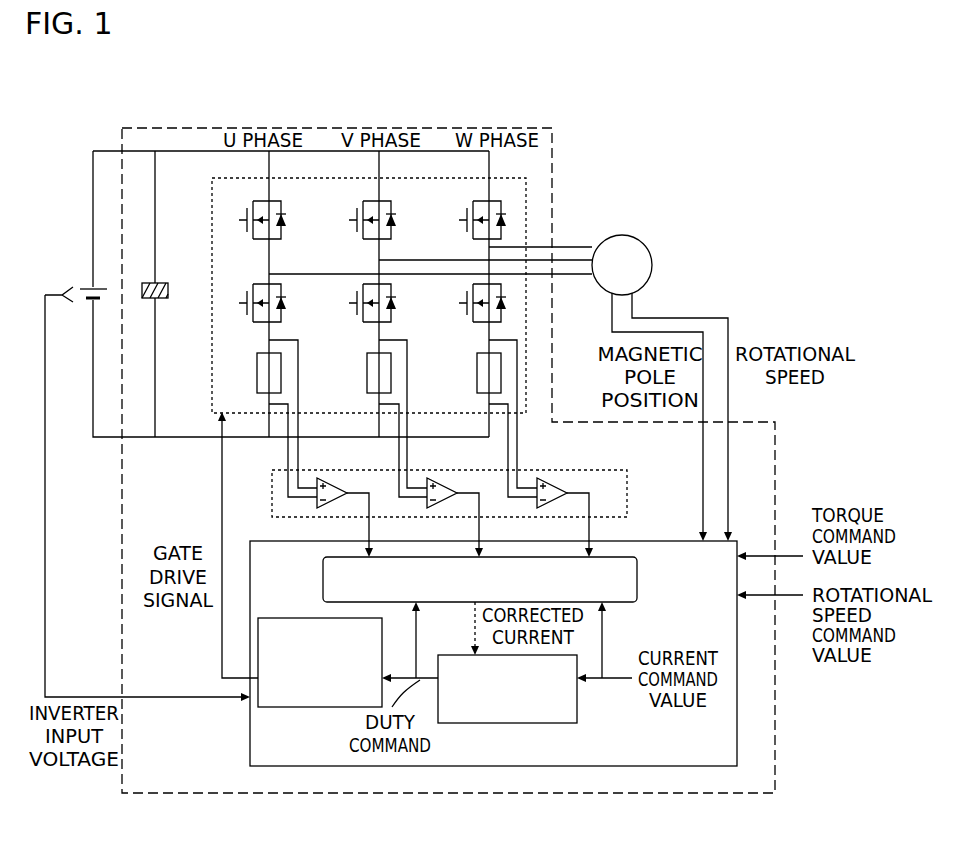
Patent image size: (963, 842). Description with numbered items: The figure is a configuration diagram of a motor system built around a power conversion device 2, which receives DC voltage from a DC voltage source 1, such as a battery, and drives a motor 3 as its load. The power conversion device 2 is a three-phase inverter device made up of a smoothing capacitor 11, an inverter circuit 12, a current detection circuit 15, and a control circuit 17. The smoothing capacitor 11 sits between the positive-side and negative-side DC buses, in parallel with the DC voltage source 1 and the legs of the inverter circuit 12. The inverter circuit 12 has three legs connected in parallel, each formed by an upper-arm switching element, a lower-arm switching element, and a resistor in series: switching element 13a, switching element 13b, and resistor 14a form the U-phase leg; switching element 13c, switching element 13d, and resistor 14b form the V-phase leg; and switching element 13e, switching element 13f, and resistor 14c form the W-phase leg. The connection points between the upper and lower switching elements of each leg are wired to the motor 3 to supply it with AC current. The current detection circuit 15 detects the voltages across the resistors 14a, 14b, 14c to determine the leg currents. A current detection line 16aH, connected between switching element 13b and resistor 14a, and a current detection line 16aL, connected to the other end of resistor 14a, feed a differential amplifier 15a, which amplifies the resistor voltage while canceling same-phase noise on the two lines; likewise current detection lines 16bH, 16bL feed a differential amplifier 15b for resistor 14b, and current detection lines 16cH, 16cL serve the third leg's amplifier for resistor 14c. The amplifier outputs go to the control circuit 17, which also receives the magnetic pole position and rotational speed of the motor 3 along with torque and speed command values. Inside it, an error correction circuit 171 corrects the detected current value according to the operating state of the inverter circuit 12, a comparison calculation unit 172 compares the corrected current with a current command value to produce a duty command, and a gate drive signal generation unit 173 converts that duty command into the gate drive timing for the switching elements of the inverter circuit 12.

The DC voltage source 1 is at (75, 270).
The power conversion device 2 is at (153, 127).
The motor 3 is at (628, 236).
The smoothing capacitor 11 is at (160, 298).
The inverter circuit 12 is at (330, 178).
The switching element 13a is at (248, 197).
The switching element 13b is at (245, 283).
The switching element 13c is at (365, 195).
The switching element 13d is at (355, 285).
The switching element 13e is at (475, 195).
The switching element 13f is at (467, 328).
The resistor 14a is at (257, 377).
The resistor 14b is at (367, 377).
The resistor 14c is at (477, 392).
The current detection circuit 15 is at (607, 470).
The differential amplifier 15a is at (340, 486).
The differential amplifier 15b is at (450, 486).
The current detection line 16aH is at (300, 452).
The current detection line 16aL is at (288, 490).
The current detection line 16bH is at (407, 452).
The current detection line 16bL is at (413, 500).
The current detection line 16cH is at (517, 452).
The current detection line 16cL is at (525, 500).
The control circuit 17 is at (738, 715).
The error correction circuit 171 is at (637, 578).
The comparison calculation unit 172 is at (530, 727).
The gate drive signal generation unit 173 is at (280, 710).